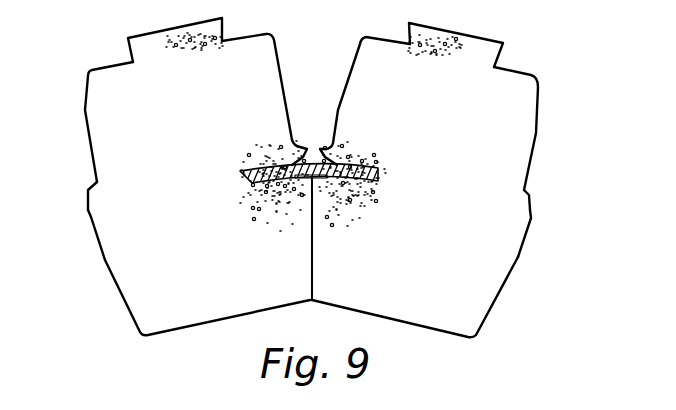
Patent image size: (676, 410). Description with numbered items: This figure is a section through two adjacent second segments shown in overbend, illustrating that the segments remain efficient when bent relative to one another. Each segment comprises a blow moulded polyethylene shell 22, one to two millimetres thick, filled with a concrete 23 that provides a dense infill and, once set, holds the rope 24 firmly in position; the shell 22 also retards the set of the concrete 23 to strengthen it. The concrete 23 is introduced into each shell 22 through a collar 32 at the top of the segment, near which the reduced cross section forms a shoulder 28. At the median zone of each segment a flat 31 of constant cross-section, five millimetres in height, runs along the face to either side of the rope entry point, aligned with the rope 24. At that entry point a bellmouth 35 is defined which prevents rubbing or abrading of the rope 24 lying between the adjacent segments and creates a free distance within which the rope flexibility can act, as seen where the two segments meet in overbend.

The shell 22 is at (121, 298).
The concrete 23 is at (282, 212).
The rope 24 is at (378, 178).
The shoulder 28 is at (96, 182).
The flat 31 is at (89, 213).
The collar 32 is at (127, 42).
The bellmouth 35 is at (331, 152).